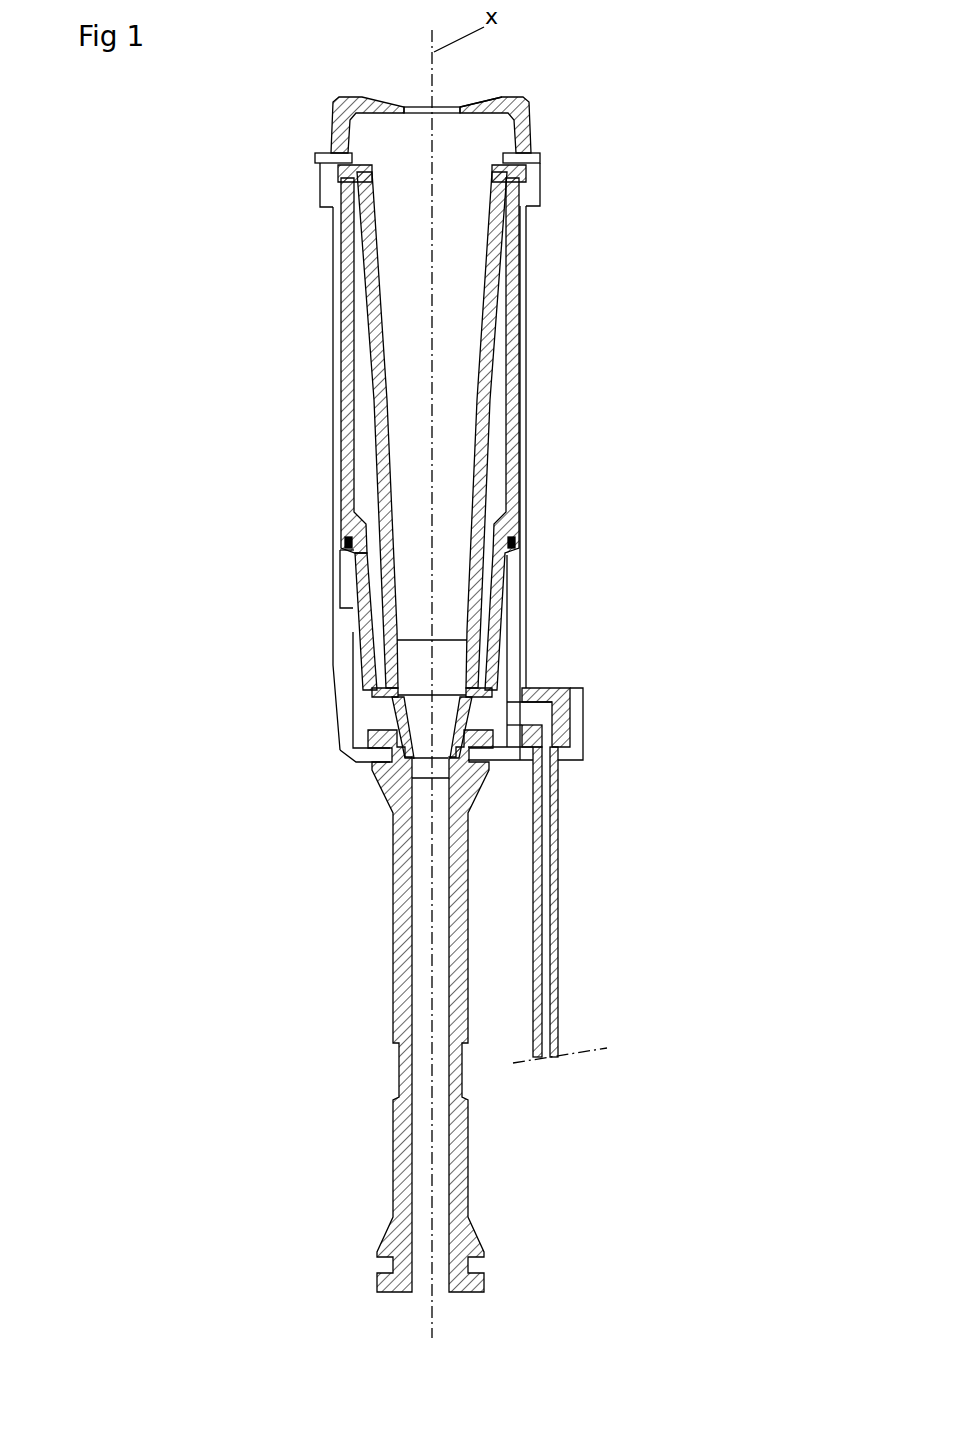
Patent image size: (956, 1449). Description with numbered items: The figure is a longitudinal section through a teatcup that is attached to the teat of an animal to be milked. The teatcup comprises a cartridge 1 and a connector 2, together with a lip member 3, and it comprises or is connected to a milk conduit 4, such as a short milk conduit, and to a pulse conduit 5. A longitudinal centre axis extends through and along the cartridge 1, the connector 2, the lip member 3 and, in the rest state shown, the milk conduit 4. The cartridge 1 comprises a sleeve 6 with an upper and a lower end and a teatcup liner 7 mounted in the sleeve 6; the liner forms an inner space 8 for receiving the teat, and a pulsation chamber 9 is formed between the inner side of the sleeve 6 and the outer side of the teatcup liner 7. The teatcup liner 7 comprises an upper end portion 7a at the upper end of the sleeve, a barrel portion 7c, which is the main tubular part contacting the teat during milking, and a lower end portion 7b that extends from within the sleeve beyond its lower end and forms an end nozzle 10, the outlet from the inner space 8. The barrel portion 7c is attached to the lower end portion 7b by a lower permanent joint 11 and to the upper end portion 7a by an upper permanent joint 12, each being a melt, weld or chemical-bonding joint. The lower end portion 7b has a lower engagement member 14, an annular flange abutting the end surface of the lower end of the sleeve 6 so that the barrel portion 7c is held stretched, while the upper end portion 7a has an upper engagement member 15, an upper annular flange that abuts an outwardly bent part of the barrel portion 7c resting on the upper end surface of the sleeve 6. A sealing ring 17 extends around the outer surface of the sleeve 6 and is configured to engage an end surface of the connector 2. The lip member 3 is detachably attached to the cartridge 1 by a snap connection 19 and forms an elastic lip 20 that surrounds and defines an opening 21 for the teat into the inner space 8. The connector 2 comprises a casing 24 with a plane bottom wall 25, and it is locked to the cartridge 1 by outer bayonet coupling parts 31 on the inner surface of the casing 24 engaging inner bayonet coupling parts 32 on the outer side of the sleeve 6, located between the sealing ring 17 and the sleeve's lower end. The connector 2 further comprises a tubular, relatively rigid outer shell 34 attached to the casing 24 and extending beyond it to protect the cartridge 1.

The cartridge 1 is at (338, 306).
The connector 2 is at (533, 636).
The lip member 3 is at (328, 96).
The milk conduit 4 is at (392, 950).
The pulse conduit 5 is at (561, 948).
The sleeve 6 is at (513, 338).
The teatcup liner 7 is at (487, 315).
The upper end portion 7a is at (318, 163).
The lower end portion 7b is at (387, 708).
The barrel portion 7c is at (372, 393).
The inner space 8 is at (459, 315).
The pulsation chamber 9 is at (499, 510).
The end nozzle 10 is at (390, 713).
The lower permanent joint 11 is at (413, 636).
The upper permanent joint 12 is at (508, 172).
The lower engagement member 14 is at (383, 703).
The upper engagement member 15 is at (535, 160).
The sealing ring 17 is at (516, 541).
The snap connection 19 is at (541, 193).
The lip 20 is at (381, 98).
The opening 21 is at (446, 106).
The casing 24 is at (345, 678).
The bottom wall 25 is at (363, 759).
The outer bayonet coupling parts 31 is at (353, 620).
The inner bayonet coupling parts 32 is at (353, 630).
The outer shell 34 is at (523, 418).